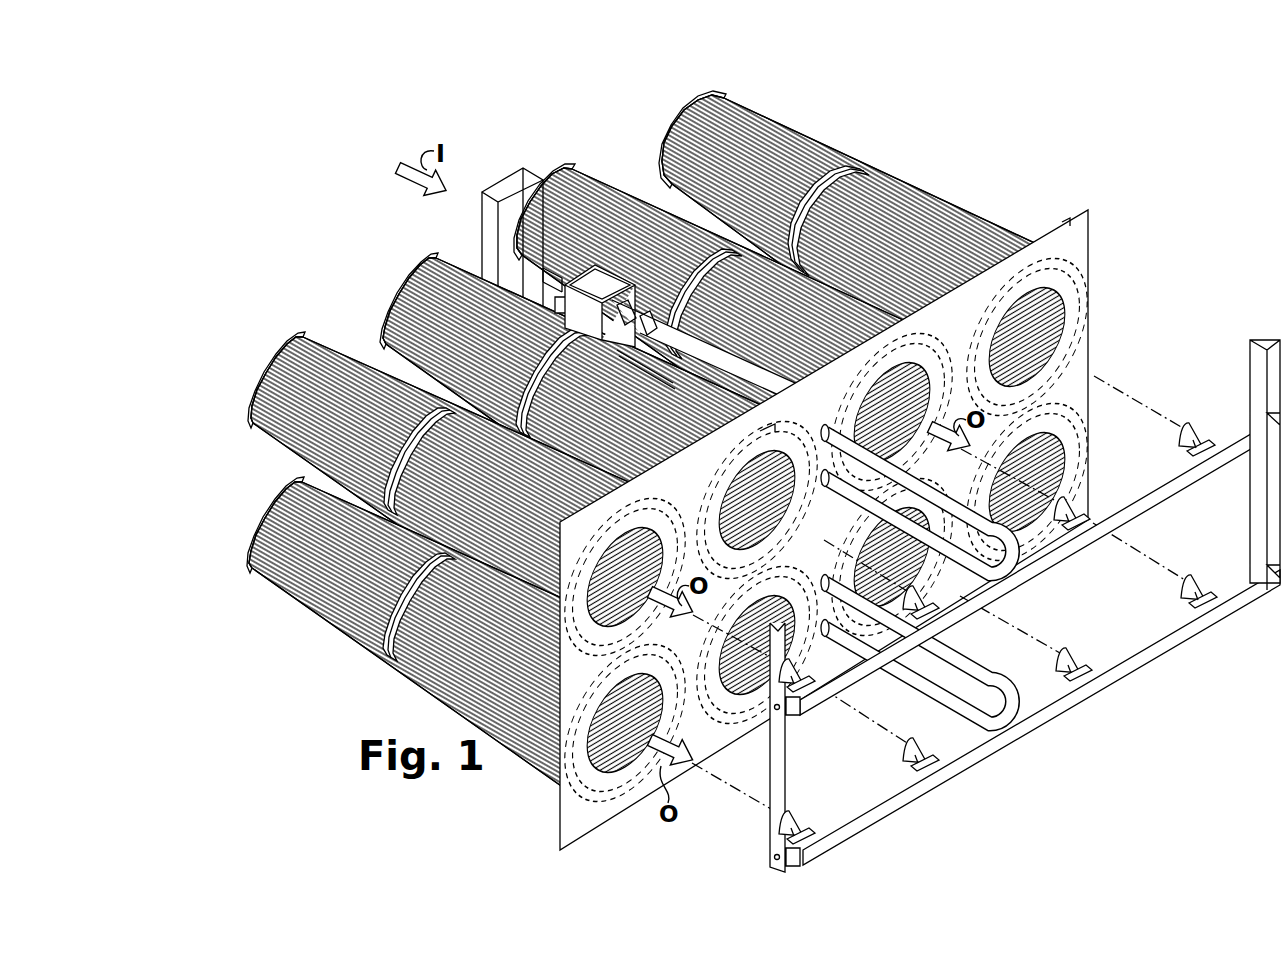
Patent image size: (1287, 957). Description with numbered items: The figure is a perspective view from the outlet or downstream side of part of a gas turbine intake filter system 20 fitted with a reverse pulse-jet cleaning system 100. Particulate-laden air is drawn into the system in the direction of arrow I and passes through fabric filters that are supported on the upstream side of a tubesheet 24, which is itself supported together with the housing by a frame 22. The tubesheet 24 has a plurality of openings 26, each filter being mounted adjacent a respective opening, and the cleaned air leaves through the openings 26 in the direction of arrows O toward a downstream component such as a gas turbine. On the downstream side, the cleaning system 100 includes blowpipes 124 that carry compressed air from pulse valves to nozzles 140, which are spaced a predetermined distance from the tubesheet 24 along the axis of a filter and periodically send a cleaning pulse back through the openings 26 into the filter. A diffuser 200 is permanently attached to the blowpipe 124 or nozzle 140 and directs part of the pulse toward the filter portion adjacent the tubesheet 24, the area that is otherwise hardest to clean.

The gas turbine intake filter system 20 is at (874, 498).
The frame 22 is at (492, 186).
The tubesheet 24 is at (1080, 242).
The openings 26 is at (1064, 330).
The reverse pulse-jet cleaning system 100 is at (986, 606).
The blowpipe 124 is at (1160, 637).
The nozzles 140 is at (1198, 575).
The diffuser 200 is at (1187, 583).